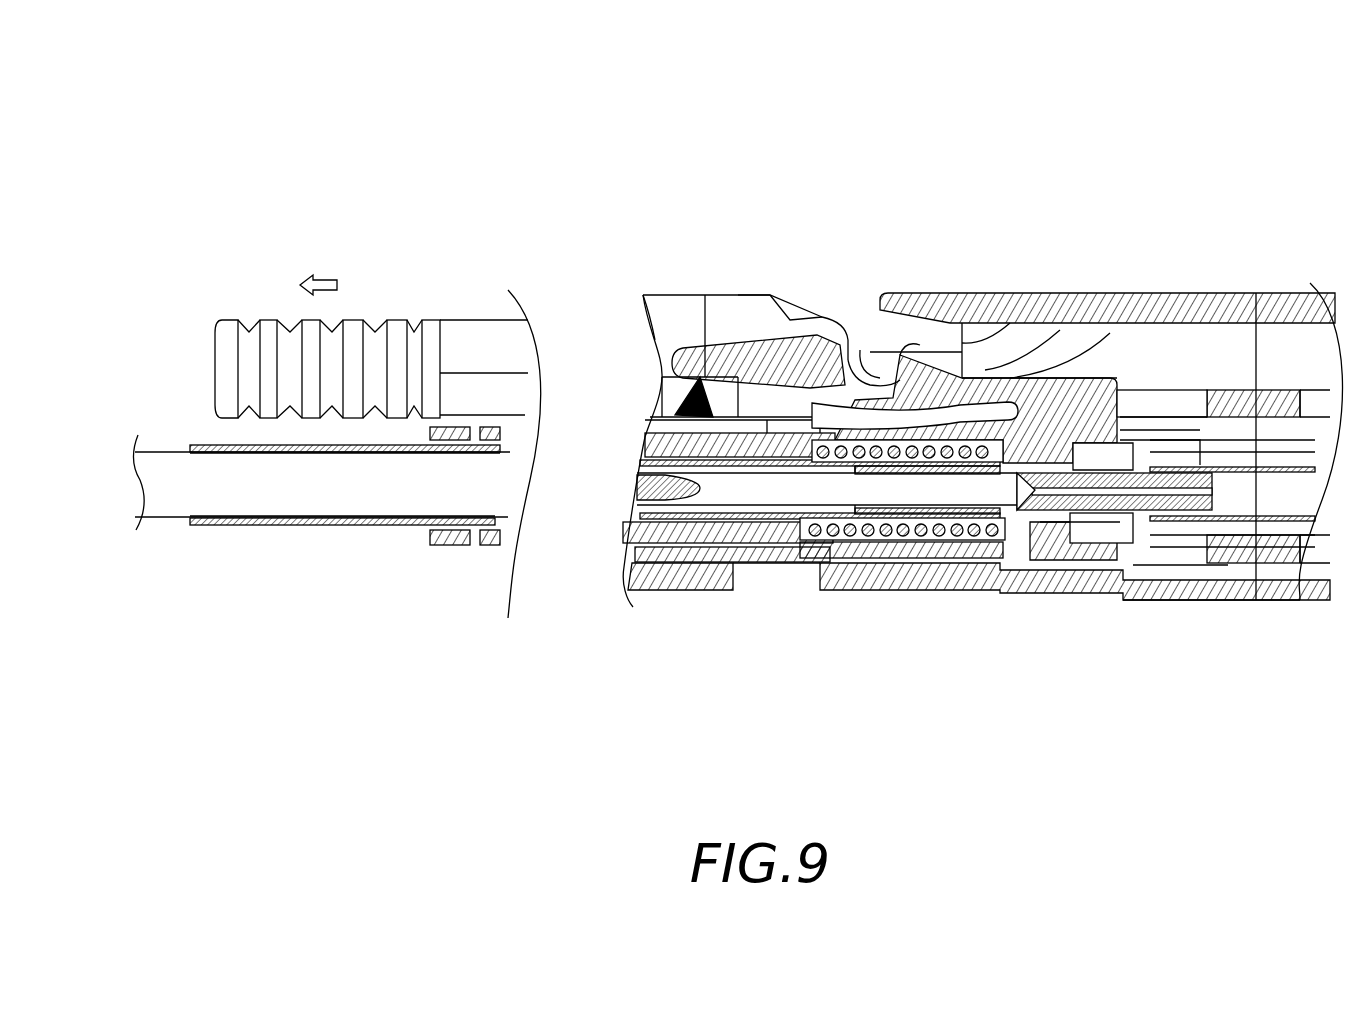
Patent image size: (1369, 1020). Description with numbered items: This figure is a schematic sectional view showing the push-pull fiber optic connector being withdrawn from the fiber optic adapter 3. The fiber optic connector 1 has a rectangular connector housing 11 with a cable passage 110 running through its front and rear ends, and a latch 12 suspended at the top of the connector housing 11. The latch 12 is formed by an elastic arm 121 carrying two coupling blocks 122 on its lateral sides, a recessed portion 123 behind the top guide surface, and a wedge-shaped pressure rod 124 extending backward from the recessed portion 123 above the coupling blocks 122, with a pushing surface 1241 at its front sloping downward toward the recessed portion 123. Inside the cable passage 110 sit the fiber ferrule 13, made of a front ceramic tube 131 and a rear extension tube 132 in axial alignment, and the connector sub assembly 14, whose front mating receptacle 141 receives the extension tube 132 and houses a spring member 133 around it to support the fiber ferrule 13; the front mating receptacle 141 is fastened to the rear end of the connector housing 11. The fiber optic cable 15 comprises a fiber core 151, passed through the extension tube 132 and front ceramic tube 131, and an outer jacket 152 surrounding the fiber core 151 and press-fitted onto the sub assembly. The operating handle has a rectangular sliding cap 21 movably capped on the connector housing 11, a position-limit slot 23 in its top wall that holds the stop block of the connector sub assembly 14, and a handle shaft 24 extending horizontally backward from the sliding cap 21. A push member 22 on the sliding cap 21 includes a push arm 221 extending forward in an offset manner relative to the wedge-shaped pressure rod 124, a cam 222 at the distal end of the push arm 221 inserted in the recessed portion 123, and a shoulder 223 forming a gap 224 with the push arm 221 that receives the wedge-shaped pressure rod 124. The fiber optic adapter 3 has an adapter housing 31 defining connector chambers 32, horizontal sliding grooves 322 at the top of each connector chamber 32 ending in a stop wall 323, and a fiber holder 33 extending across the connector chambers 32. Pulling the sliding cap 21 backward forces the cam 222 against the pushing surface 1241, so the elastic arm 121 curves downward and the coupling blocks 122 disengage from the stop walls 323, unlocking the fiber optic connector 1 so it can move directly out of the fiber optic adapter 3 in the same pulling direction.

The fiber optic connector 1 is at (1190, 669).
The connector housing 11 is at (1118, 527).
The cable passage 110 is at (1228, 568).
The latch 12 is at (1113, 223).
The elastic arm 121 is at (1078, 330).
The coupling blocks 122 is at (932, 370).
The recessed portion 123 is at (930, 370).
The wedge-shaped pressure rod 124 is at (705, 375).
The pushing surface 1241 is at (860, 350).
The fiber ferrule 13 is at (1027, 540).
The front ceramic tube 131 is at (1108, 507).
The rear extension tube 132 is at (935, 537).
The spring member 133 is at (840, 533).
The connector sub assembly 14 is at (763, 639).
The front mating receptacle 141 is at (753, 547).
The fiber optic cable 15 is at (283, 534).
The fiber core 151 is at (645, 489).
The outer jacket 152 is at (365, 498).
The sliding cap 21 is at (668, 365).
The push member 22 is at (800, 163).
The push arm 221 is at (790, 320).
The cam 222 is at (823, 300).
The shoulder 223 is at (667, 293).
The gap 224 is at (742, 320).
The position-limit slot 23 is at (662, 405).
The handle shaft 24 is at (459, 337).
The fiber optic adapter 3 is at (1257, 280).
The adapter housing 31 is at (1147, 330).
The connector chambers 32 is at (1293, 293).
The horizontal sliding grooves 322 is at (1038, 320).
The stop wall 323 is at (1002, 293).
The fiber holder 33 is at (1237, 465).